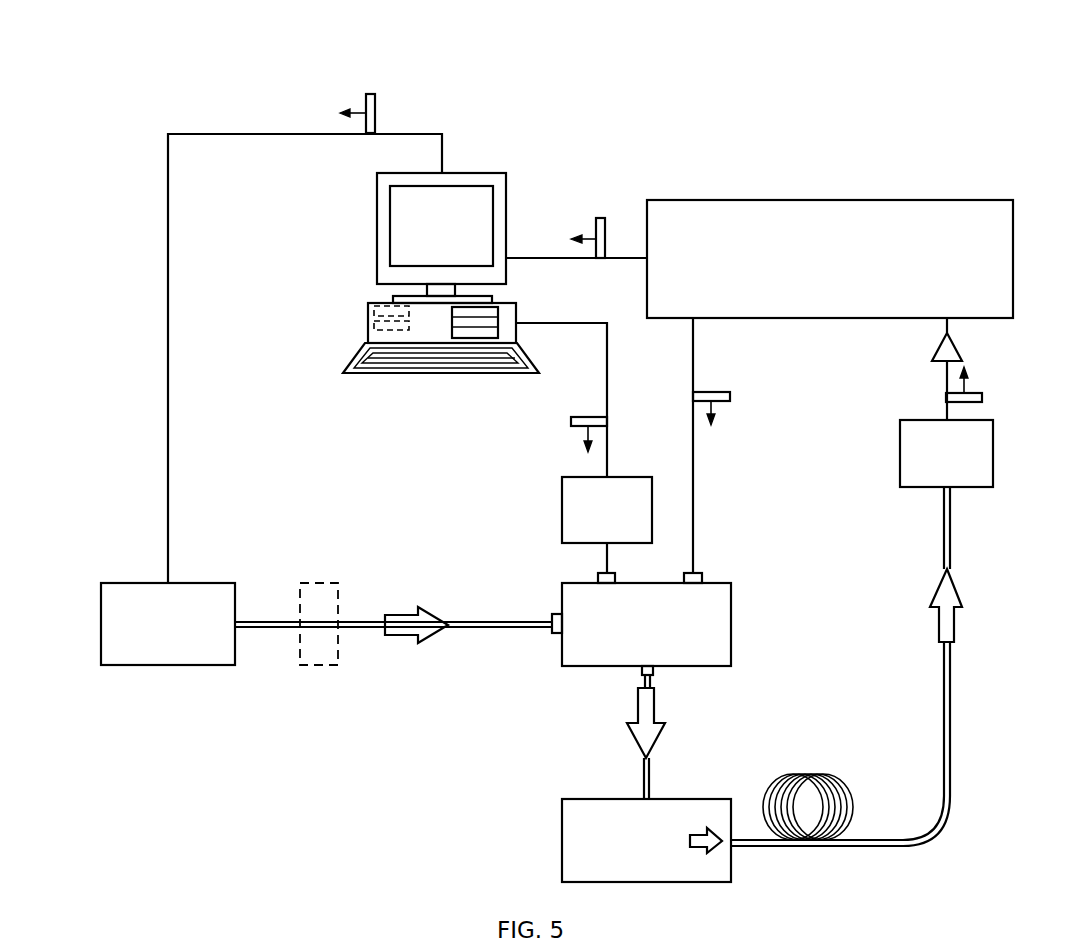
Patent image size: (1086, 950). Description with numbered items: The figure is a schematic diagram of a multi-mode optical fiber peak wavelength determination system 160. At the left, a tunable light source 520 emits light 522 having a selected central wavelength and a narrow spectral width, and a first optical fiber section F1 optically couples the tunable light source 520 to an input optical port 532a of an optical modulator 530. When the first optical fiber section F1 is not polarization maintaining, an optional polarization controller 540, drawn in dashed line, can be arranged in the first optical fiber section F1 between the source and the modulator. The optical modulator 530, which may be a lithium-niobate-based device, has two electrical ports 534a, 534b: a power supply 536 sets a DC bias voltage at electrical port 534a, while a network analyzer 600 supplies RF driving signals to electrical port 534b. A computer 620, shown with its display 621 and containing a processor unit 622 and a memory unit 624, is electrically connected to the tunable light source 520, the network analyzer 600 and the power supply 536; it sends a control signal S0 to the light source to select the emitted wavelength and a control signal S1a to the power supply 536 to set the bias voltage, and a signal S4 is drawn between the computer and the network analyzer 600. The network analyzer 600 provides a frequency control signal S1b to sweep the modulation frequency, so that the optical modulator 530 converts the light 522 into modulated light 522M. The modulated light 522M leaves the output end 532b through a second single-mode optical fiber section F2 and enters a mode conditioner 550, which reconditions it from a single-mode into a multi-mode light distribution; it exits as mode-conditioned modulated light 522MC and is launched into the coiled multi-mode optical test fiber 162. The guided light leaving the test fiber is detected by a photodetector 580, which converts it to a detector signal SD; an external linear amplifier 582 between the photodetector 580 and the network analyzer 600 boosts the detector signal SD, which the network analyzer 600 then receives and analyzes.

The multi-mode optical fiber peak wavelength determination system 160 is at (143, 108).
The tunable light source 520 is at (130, 590).
The polarization controller 540 is at (333, 583).
The light 522 is at (401, 614).
The first optical fiber section F1 is at (360, 630).
The optical modulator 530 is at (722, 620).
The input optical port 532a is at (552, 633).
The output end 532b is at (640, 673).
The electrical port 534a is at (598, 577).
The electrical port 534b is at (703, 577).
The power supply 536 is at (568, 511).
The control signal S1a is at (571, 420).
The frequency control signal S1b is at (731, 397).
The feedback signal S4 is at (600, 218).
The control signal S0 is at (376, 112).
The detector signal SD is at (983, 398).
The network analyzer 600 is at (948, 208).
The external linear amplifier 582 is at (956, 343).
The photodetector 580 is at (983, 453).
The mode-conditioned modulated light 522MC is at (957, 612).
The modulated light 522M is at (637, 713).
The second single-mode optical fiber section F2 is at (652, 680).
The mode conditioner 550 is at (695, 806).
The multi-mode optical test fiber 162 is at (808, 845).
The computer 620 is at (466, 299).
The display 621 is at (480, 173).
The processor unit 622 is at (374, 311).
The memory unit 624 is at (374, 325).